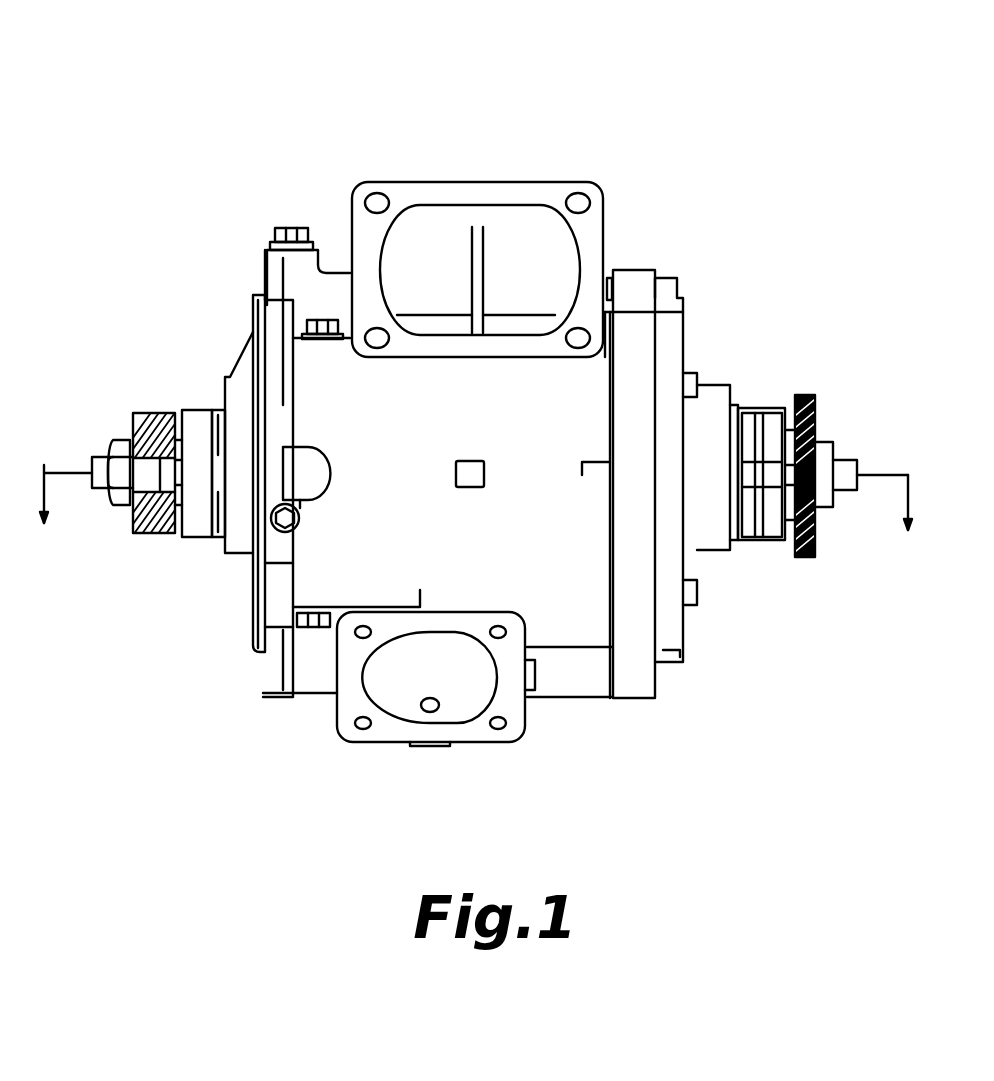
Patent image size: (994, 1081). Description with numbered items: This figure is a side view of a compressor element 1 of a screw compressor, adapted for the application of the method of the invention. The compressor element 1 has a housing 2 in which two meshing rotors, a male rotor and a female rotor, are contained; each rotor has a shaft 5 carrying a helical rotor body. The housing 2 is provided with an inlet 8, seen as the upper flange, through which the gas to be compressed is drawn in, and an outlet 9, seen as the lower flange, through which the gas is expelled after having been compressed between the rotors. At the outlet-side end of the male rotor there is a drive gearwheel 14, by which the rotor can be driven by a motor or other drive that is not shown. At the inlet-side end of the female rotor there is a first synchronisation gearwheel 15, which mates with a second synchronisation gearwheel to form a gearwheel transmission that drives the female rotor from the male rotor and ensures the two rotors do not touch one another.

The compressor element 1 is at (780, 93).
The housing 2 is at (570, 683).
The shaft 5 is at (853, 467).
The inlet 8 is at (512, 218).
The outlet 9 is at (385, 703).
The drive gearwheel 14 is at (140, 413).
The first synchronisation gearwheel 15 is at (813, 397).